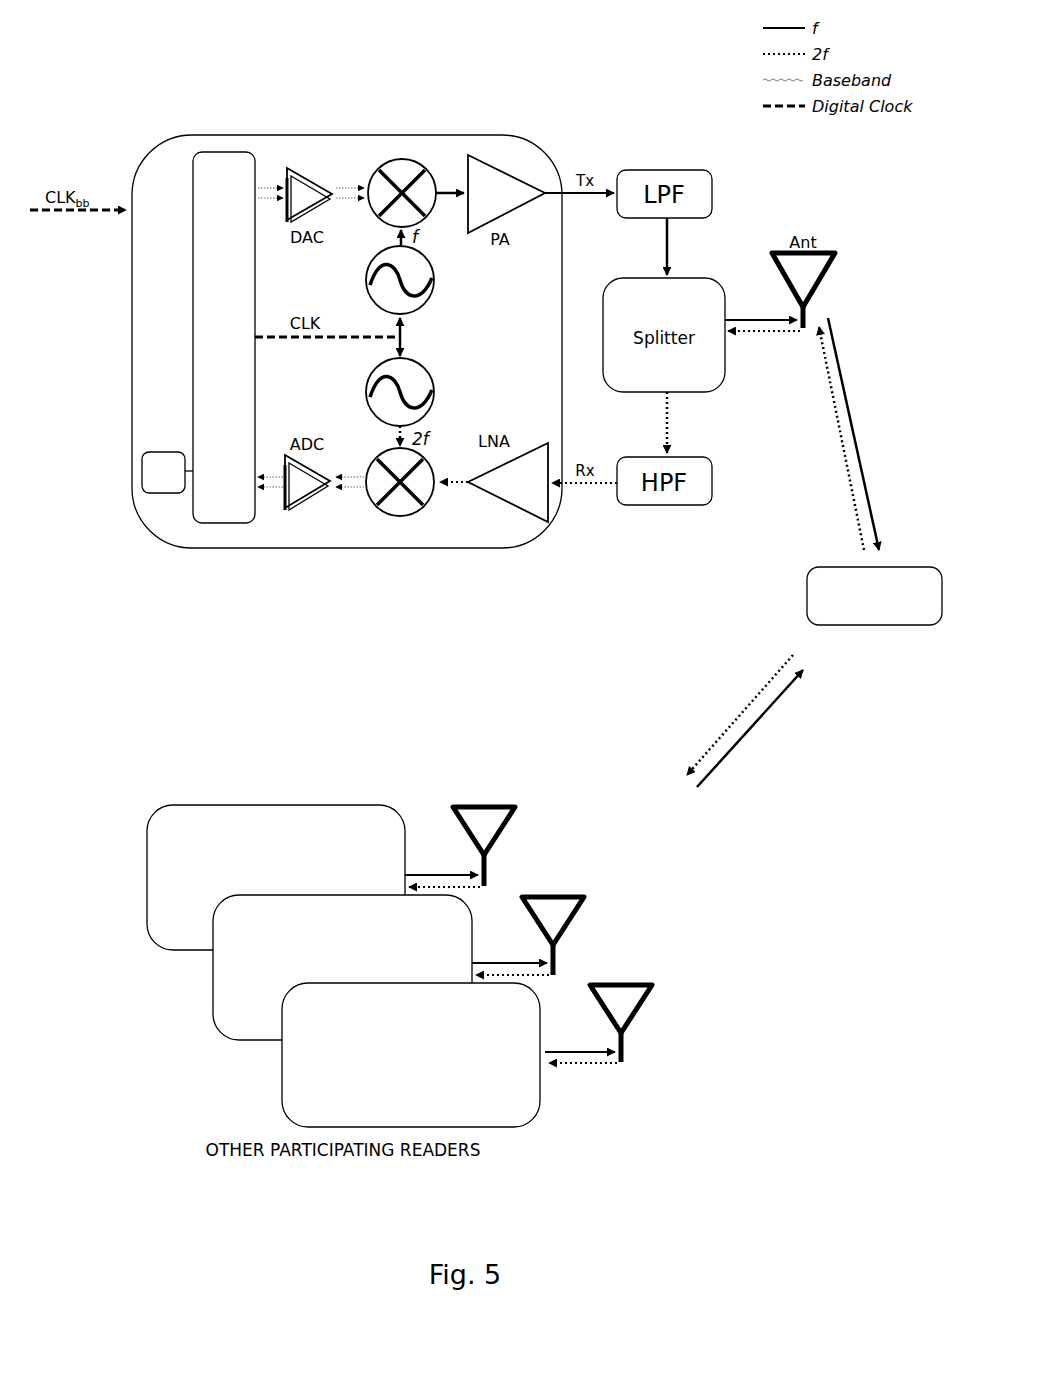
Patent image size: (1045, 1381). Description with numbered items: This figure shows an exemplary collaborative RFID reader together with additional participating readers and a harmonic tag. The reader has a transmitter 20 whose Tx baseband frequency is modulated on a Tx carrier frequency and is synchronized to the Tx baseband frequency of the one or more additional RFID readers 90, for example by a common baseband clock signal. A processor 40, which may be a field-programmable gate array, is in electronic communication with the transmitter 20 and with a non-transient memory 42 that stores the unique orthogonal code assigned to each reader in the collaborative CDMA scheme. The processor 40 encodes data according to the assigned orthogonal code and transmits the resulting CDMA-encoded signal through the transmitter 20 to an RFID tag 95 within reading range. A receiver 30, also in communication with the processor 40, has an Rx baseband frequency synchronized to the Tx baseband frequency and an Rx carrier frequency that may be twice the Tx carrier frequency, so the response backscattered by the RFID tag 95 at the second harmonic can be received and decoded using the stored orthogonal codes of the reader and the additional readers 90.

The transmitter 20 is at (390, 160).
The receiver 30 is at (395, 514).
The processor 40 is at (224, 337).
The non-transient memory 42 is at (167, 472).
The additional RFID readers 90 is at (399, 966).
The RFID tag 95 is at (889, 626).